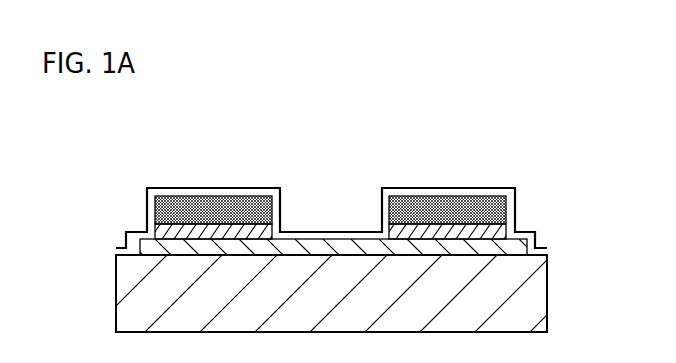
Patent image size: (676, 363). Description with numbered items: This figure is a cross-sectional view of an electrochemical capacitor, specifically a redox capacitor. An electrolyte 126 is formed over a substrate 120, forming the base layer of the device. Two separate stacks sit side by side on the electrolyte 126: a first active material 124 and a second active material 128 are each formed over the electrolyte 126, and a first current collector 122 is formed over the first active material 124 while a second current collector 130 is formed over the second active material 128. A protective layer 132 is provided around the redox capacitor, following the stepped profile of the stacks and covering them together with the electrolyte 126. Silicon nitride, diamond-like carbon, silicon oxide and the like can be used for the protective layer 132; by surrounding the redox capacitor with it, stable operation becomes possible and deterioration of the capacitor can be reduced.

The substrate 120 is at (289, 268).
The first current collector 122 is at (222, 208).
The first active material 124 is at (178, 234).
The electrolyte 126 is at (322, 250).
The second active material 128 is at (425, 234).
The second current collector 130 is at (468, 213).
The protective layer 132 is at (359, 248).